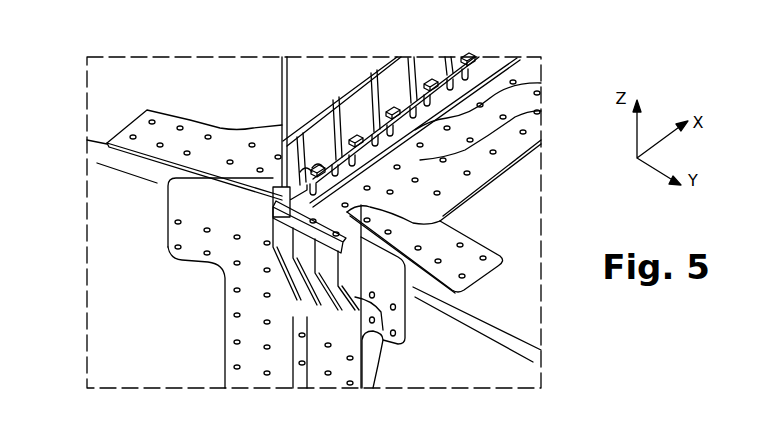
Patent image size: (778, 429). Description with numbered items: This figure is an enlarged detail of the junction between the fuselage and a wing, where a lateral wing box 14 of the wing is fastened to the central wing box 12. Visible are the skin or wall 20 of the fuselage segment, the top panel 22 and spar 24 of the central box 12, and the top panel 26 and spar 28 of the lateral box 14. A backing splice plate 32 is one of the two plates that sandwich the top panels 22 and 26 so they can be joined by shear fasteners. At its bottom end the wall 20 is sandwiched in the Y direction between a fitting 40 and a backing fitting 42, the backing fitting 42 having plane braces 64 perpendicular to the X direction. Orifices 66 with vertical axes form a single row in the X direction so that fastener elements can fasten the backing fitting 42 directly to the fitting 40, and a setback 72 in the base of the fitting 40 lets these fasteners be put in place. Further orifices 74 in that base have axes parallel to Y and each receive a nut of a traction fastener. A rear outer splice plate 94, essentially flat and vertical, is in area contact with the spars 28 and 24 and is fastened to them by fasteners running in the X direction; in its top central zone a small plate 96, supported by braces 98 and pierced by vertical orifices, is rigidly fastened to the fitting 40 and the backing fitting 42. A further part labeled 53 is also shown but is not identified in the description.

The central wing box 12 is at (529, 323).
The lateral wing box 14 is at (130, 213).
The skin 20 is at (294, 70).
The top panel of the central box 22 is at (513, 228).
The spar of the central box 24 is at (462, 356).
The top panel of the lateral box 26 is at (123, 88).
The spar of the lateral box 28 is at (130, 353).
The backing splice plate 32 is at (531, 72).
The fitting 40 is at (273, 223).
The backing fitting 42 is at (424, 72).
The splice plate 53 is at (170, 127).
The braces 64 is at (281, 121).
The orifices 66 is at (422, 87).
The setback 72 is at (539, 110).
The orifices 74 is at (539, 84).
The rear outer splice plate 94 is at (253, 306).
The small plate 96 is at (413, 217).
The braces 98 is at (373, 388).